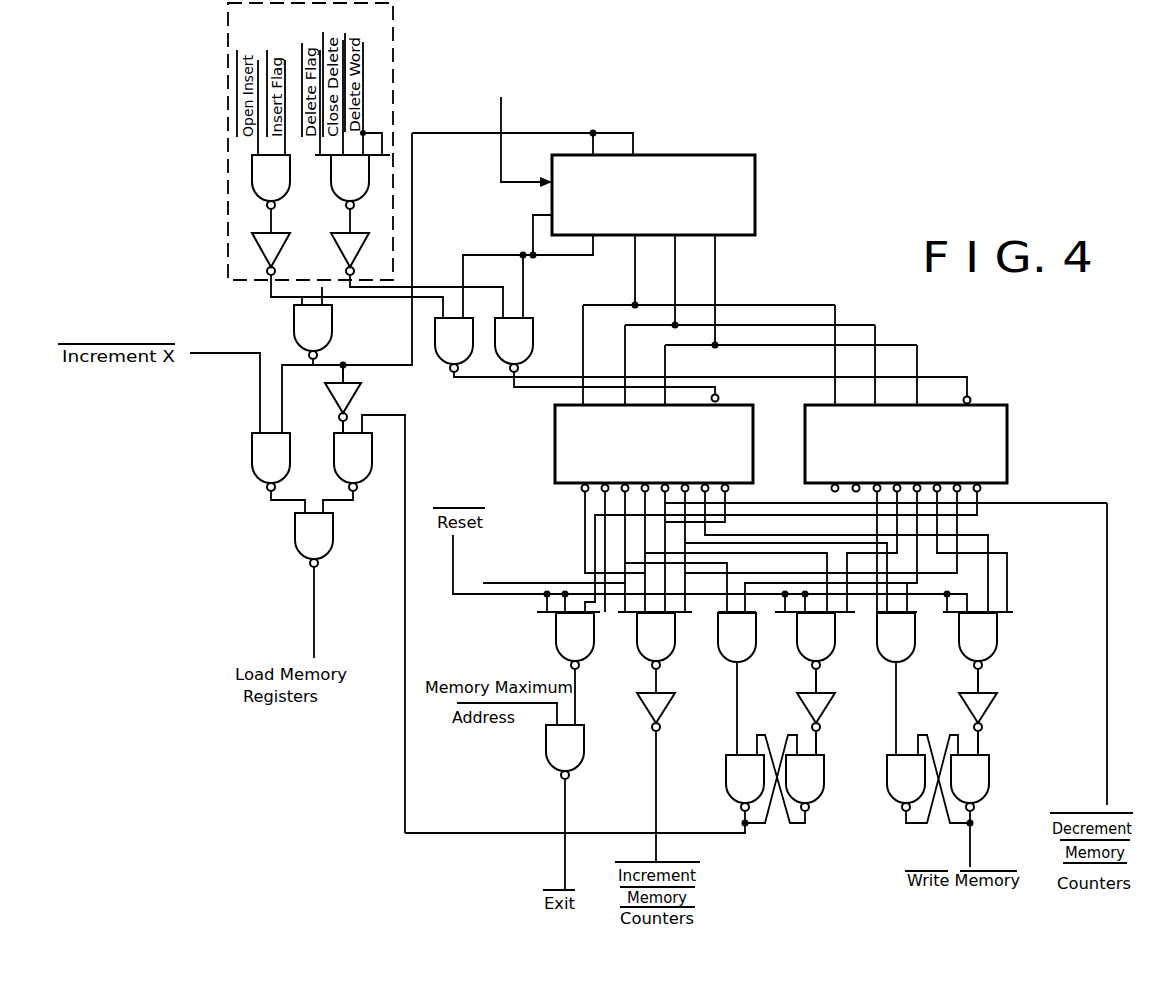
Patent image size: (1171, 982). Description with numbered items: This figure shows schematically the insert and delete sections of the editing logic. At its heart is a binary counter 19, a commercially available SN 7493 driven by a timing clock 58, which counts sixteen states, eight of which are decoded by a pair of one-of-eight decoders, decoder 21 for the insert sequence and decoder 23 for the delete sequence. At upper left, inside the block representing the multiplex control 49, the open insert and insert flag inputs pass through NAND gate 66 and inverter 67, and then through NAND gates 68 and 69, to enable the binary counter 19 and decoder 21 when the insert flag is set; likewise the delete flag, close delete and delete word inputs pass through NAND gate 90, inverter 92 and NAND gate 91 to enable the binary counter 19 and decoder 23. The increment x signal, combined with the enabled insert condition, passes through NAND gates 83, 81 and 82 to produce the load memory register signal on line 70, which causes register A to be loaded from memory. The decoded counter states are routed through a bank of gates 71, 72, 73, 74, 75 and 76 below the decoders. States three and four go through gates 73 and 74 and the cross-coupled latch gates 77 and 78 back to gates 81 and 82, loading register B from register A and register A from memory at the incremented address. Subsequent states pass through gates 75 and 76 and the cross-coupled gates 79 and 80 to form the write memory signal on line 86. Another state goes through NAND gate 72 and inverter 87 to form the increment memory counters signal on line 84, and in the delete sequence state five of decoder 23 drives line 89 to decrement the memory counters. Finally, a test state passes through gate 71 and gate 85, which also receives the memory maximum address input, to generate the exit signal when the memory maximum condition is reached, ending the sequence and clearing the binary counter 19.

The binary counter 19 is at (729, 162).
The decoder 21 is at (990, 404).
The decoder 23 is at (753, 431).
The multiplex control 49 is at (227, 196).
The timing clock 58 is at (539, 130).
The NAND gate 66 is at (276, 172).
The inverter 67 is at (274, 252).
The NAND gate 68 is at (441, 355).
The NAND gate 69 is at (318, 323).
The line 70 is at (316, 621).
The gate 71 is at (560, 641).
The NAND gate 72 is at (642, 641).
The gate 73 is at (722, 641).
The gate 74 is at (802, 641).
The gate 75 is at (885, 641).
The gate 76 is at (968, 641).
The gate 77 is at (738, 776).
The gate 78 is at (813, 775).
The gate 79 is at (897, 772).
The gate 80 is at (986, 765).
The gate 81 is at (366, 458).
The gate 82 is at (326, 541).
The NAND gate 83 is at (253, 462).
The line 84 is at (658, 848).
The gate 85 is at (577, 745).
The line 86 is at (970, 860).
The inverter 87 is at (662, 712).
The line 89 is at (1107, 752).
The NAND gate 90 is at (355, 172).
The NAND gate 91 is at (522, 334).
The inverter 92 is at (353, 252).